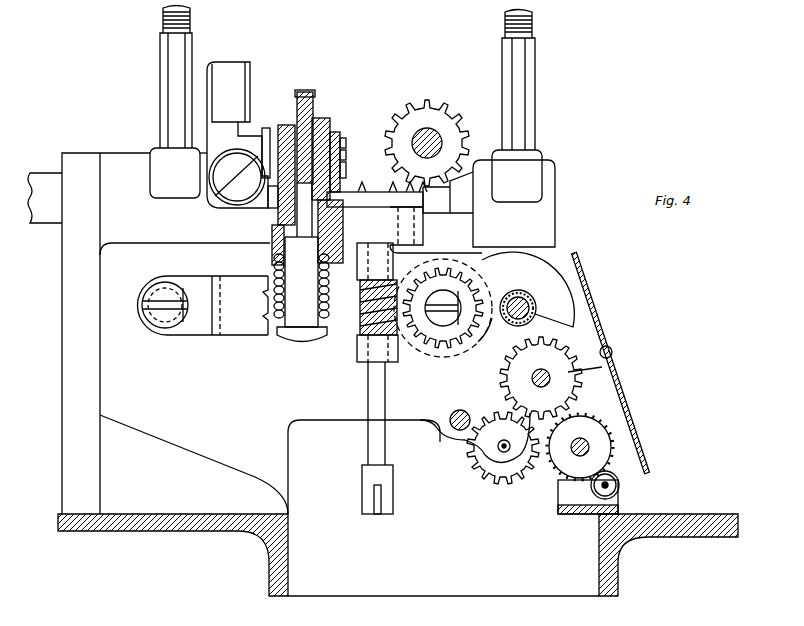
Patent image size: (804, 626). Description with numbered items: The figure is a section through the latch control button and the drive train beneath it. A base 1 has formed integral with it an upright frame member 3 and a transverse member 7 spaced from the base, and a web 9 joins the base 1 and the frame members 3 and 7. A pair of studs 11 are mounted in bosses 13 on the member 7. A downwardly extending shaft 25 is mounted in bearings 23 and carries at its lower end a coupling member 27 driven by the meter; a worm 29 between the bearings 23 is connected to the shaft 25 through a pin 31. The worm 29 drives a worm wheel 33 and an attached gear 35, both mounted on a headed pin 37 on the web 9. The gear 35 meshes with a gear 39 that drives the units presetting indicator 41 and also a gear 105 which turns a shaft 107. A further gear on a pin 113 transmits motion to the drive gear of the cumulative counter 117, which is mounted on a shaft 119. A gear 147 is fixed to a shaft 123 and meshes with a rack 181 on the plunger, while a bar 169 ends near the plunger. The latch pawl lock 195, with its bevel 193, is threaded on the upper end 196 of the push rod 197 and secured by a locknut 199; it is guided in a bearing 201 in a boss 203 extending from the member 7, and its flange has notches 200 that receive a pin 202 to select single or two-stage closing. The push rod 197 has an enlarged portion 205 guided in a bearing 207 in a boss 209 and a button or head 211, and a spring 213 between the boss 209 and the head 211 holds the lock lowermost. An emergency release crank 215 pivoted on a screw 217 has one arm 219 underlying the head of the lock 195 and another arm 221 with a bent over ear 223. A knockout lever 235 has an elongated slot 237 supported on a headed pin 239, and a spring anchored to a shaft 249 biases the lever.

The base 1 is at (655, 533).
The upright frame member 3 is at (95, 373).
The transverse member 7 is at (207, 236).
The web 9 is at (214, 405).
The studs 11 is at (165, 45).
The bosses 13 is at (160, 155).
The bearings 23 is at (360, 266).
The shaft 25 is at (370, 440).
The coupling member 27 is at (362, 490).
The worm 29 is at (363, 313).
The pin 31 is at (365, 283).
The worm wheel 33 is at (430, 258).
The gear 35 is at (447, 267).
The headed pin 37 is at (470, 273).
The gear 39 is at (497, 342).
The units presetting indicator 41 is at (540, 265).
The gear 105 is at (517, 380).
The shaft 107 is at (533, 380).
The pin 113 is at (505, 440).
The cumulative counter 117 is at (613, 425).
The shaft 119 is at (585, 452).
The shaft 123 is at (427, 133).
The gear 147 is at (410, 103).
The bar 169 is at (31, 173).
The rack 181 is at (373, 190).
The bevelled contour 193 is at (341, 222).
The latch pawl lock 195 is at (330, 124).
The upper end of push rod 196 is at (313, 99).
The push rod 197 is at (313, 87).
The locknut 199 is at (313, 122).
The notches 200 is at (341, 142).
The bearing 201 is at (334, 158).
The pin 202 is at (265, 130).
The boss 203 is at (330, 174).
The enlarged portion 205 is at (313, 291).
The bearing 207 is at (273, 262).
The boss 209 is at (275, 245).
The button or head 211 is at (288, 340).
The spring 213 is at (272, 325).
The emergency release crank 215 is at (222, 200).
The screw 217 is at (252, 195).
The arm 219 is at (266, 196).
The arm 221 is at (215, 65).
The ear 223 is at (250, 75).
The knockout lever 235 is at (200, 333).
The elongated slot 237 is at (182, 300).
The headed pin 239 is at (150, 286).
The shaft 249 is at (453, 428).